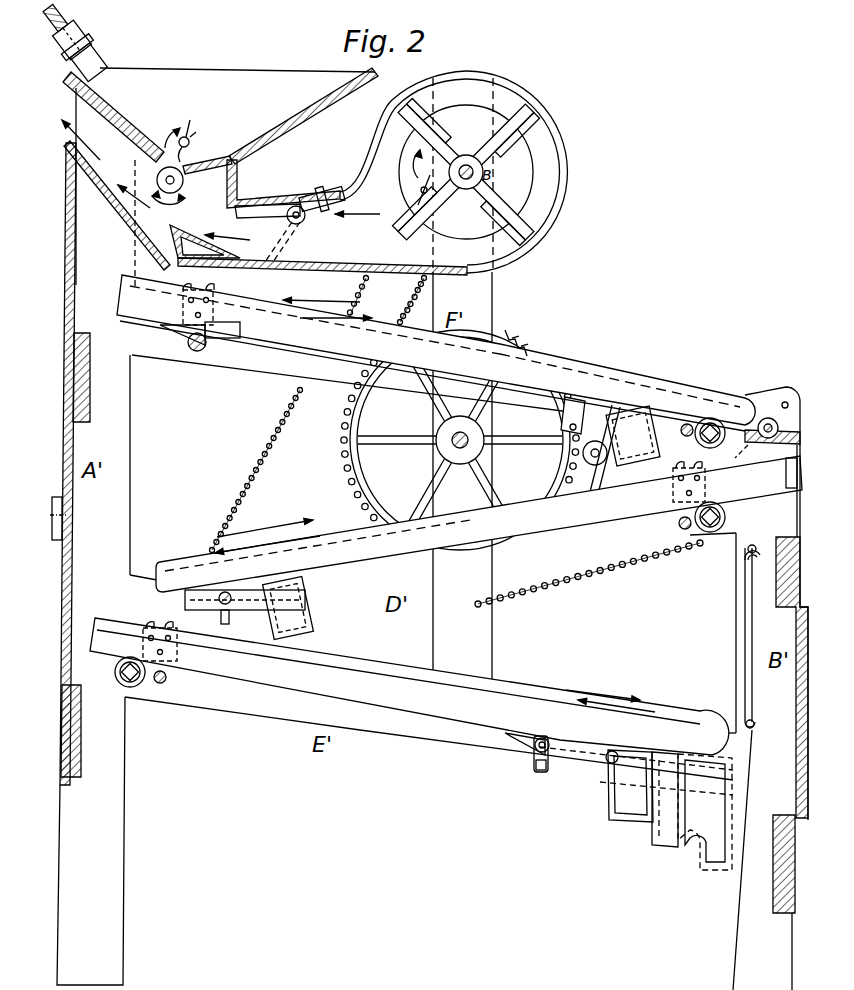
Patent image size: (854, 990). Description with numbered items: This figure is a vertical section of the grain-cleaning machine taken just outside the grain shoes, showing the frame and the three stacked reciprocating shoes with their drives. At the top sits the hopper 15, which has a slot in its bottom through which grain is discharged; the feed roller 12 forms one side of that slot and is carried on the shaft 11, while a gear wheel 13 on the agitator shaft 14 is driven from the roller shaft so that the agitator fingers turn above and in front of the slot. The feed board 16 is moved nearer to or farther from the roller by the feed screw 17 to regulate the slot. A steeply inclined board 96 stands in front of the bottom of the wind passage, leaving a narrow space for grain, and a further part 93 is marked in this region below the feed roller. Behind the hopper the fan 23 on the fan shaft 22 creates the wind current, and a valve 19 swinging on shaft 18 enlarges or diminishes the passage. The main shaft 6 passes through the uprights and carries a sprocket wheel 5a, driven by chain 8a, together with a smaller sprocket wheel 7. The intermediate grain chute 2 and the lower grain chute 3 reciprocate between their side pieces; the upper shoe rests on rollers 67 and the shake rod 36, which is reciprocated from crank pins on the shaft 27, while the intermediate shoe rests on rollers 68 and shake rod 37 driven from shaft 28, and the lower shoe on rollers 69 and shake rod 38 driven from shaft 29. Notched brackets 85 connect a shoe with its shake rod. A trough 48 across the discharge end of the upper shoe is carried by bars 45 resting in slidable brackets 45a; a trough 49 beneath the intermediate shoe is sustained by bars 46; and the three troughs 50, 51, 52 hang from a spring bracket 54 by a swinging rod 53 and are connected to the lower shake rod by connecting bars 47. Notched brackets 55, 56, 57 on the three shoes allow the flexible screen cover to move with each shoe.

The intermediate grain chute 2 is at (343, 540).
The lower grain chute 3 is at (440, 707).
The sprocket wheel 5a is at (513, 337).
The main shaft 6 is at (462, 438).
The sprocket wheel 7 is at (602, 383).
The chain 8a is at (256, 470).
The feed roller shaft 11 is at (178, 180).
The feed roller 12 is at (179, 192).
The gear wheel 13 is at (198, 136).
The agitator shaft 14 is at (187, 135).
The hopper 15 is at (198, 72).
The feed board 16 is at (124, 118).
The feed screw 17 is at (82, 27).
The valve shaft 18 is at (300, 200).
The valve 19 is at (253, 212).
The fan shaft 22 is at (466, 155).
The fan 23 is at (425, 120).
The shaft 27 is at (677, 437).
The shaft 28 is at (685, 529).
The shaft 29 is at (162, 683).
The shake rod 36 is at (197, 351).
The shake rod 37 is at (218, 599).
The shake rod 38 is at (763, 440).
The bars 45 is at (537, 407).
The brackets 45a is at (572, 397).
The bars 46 is at (247, 590).
The connecting bars 47 is at (597, 762).
The trough 48 is at (633, 436).
The trough 49 is at (307, 612).
The trough 50 is at (616, 820).
The trough 51 is at (665, 830).
The trough 52 is at (712, 865).
The swinging rod 53 is at (748, 650).
The spring bracket 54 is at (750, 565).
The notched bracket 55 is at (195, 290).
The notched bracket 56 is at (678, 477).
The notched bracket 57 is at (147, 628).
The rollers 67 is at (712, 418).
The rollers 68 is at (712, 532).
The rollers 69 is at (133, 687).
The notched brackets 85 is at (175, 332).
The deflector 93 is at (210, 239).
The inclined board 96 is at (117, 205).